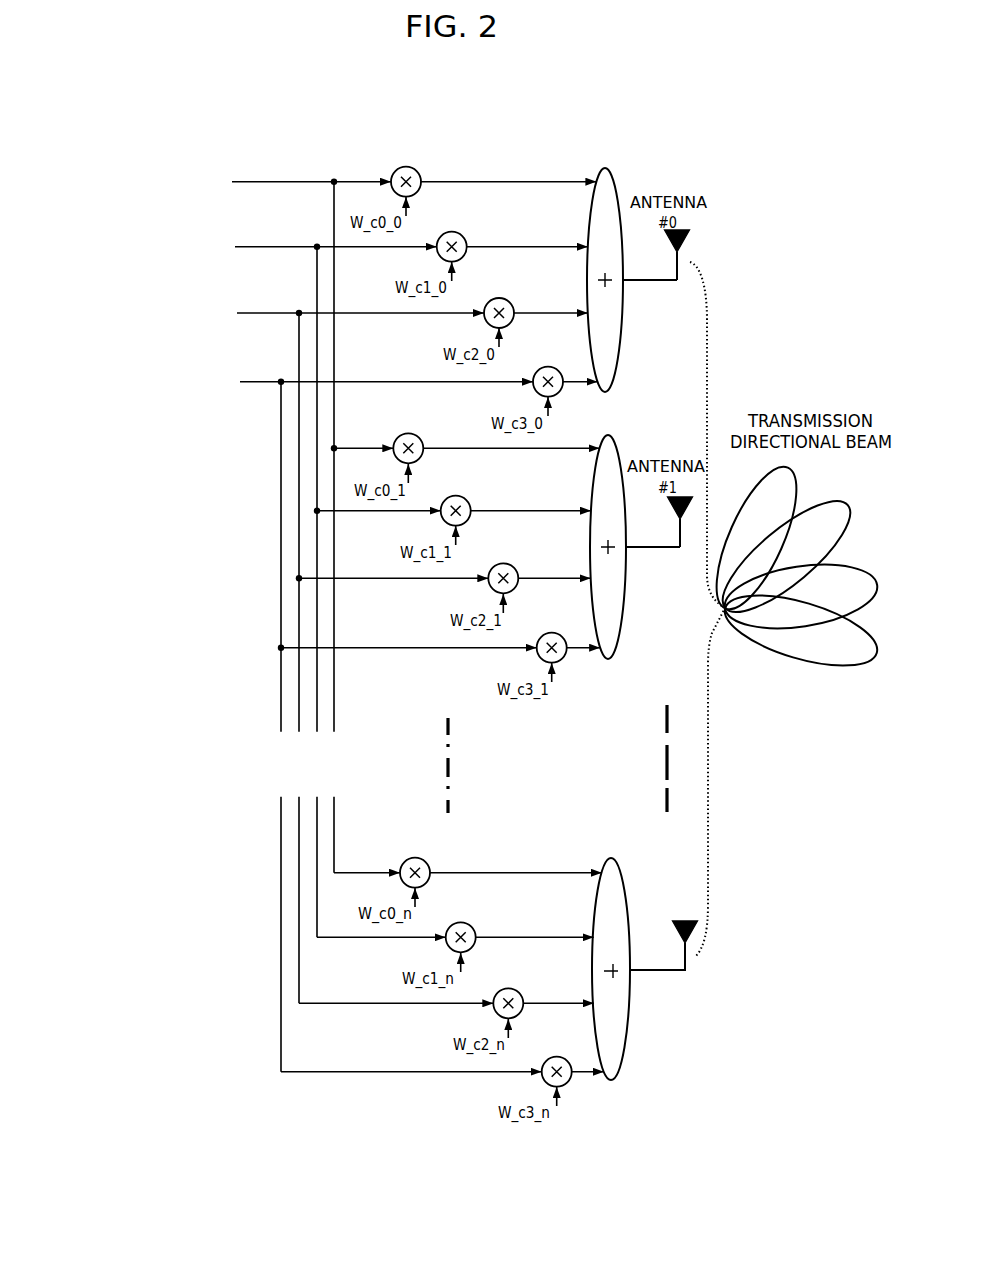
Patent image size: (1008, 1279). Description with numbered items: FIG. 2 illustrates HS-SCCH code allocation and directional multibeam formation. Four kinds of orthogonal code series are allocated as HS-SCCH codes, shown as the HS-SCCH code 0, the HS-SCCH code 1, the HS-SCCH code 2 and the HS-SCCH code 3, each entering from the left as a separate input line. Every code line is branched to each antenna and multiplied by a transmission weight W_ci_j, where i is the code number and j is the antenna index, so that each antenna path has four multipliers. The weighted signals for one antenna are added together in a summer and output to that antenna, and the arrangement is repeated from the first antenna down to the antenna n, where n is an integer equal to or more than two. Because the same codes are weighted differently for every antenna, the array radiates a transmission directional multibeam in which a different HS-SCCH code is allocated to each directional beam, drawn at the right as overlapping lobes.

The orthogonal code series 0 is at (214, 514).
The orthogonal code series 1 is at (238, 580).
The orthogonal code series 2 is at (259, 646).
The orthogonal code series 3 is at (283, 714).
The antenna n is at (669, 925).